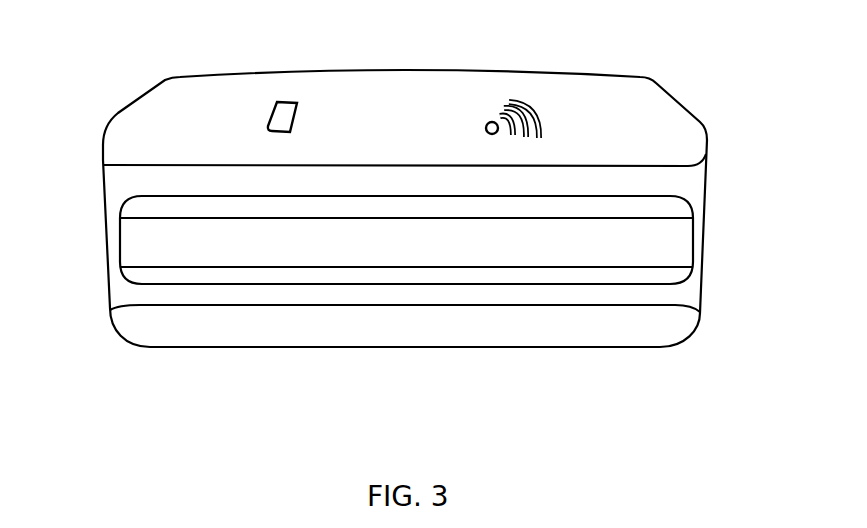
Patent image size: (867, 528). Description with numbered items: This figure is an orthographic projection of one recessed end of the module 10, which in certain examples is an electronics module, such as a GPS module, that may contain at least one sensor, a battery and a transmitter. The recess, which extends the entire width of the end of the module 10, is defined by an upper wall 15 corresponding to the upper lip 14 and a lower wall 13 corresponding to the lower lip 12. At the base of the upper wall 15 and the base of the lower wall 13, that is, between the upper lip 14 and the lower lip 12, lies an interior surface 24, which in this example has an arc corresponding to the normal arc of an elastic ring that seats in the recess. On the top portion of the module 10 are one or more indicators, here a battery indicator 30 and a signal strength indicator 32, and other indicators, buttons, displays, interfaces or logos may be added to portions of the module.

The module 10 is at (635, 131).
The lower lip 12 is at (576, 285).
The lower wall 13 is at (201, 268).
The upper lip 14 is at (634, 173).
The upper wall 15 is at (178, 198).
The interior surface 24 is at (397, 254).
The battery indicator 30 is at (281, 82).
The signal strength indicator 32 is at (526, 80).